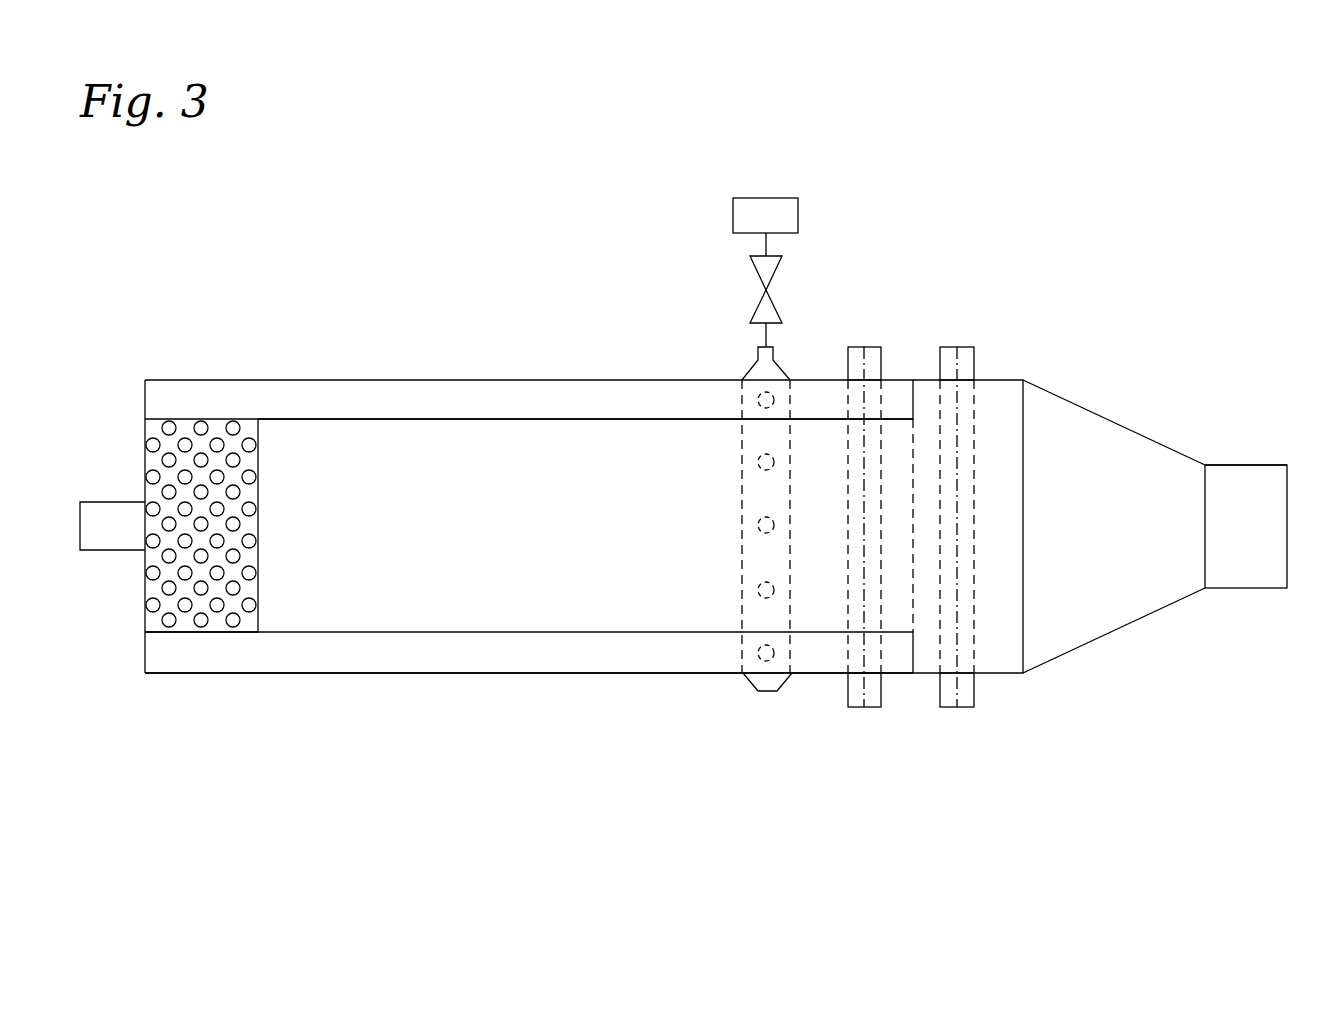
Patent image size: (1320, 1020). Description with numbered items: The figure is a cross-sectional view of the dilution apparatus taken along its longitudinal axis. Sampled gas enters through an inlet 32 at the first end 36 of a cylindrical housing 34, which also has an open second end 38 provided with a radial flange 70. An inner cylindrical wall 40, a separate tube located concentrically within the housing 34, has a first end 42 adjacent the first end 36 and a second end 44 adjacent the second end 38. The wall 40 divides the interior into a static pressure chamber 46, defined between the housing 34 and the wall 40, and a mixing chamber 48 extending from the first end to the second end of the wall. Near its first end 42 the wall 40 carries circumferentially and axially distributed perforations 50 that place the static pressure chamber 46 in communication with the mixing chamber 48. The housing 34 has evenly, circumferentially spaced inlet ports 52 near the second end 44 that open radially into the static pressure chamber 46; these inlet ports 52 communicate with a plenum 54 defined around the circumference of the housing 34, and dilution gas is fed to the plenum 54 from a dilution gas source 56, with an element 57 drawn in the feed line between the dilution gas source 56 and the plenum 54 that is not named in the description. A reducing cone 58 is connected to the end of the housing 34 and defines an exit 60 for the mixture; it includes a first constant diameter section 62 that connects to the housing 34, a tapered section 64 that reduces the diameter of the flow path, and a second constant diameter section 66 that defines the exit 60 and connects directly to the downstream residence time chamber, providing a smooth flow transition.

The inlet 32 is at (143, 522).
The cylindrical housing 34 is at (245, 378).
The first end 36 is at (145, 393).
The second end 38 is at (835, 524).
The inner cylindrical wall 40 is at (343, 633).
The first end 42 is at (150, 635).
The second end 44 is at (913, 653).
The static pressure chamber 46 is at (393, 658).
The mixing chamber 48 is at (463, 438).
The perforations 50 is at (203, 597).
The inlet ports 52 is at (767, 380).
The plenum 54 is at (768, 368).
The dilution gas source 56 is at (733, 213).
The valve 57 is at (758, 302).
The reducing cone 58 is at (1106, 519).
The exit 60 is at (1258, 535).
The first constant diameter section 62 is at (1007, 380).
The tapered section 64 is at (1048, 662).
The second constant diameter section 66 is at (1237, 465).
The radial flange 70 is at (847, 695).